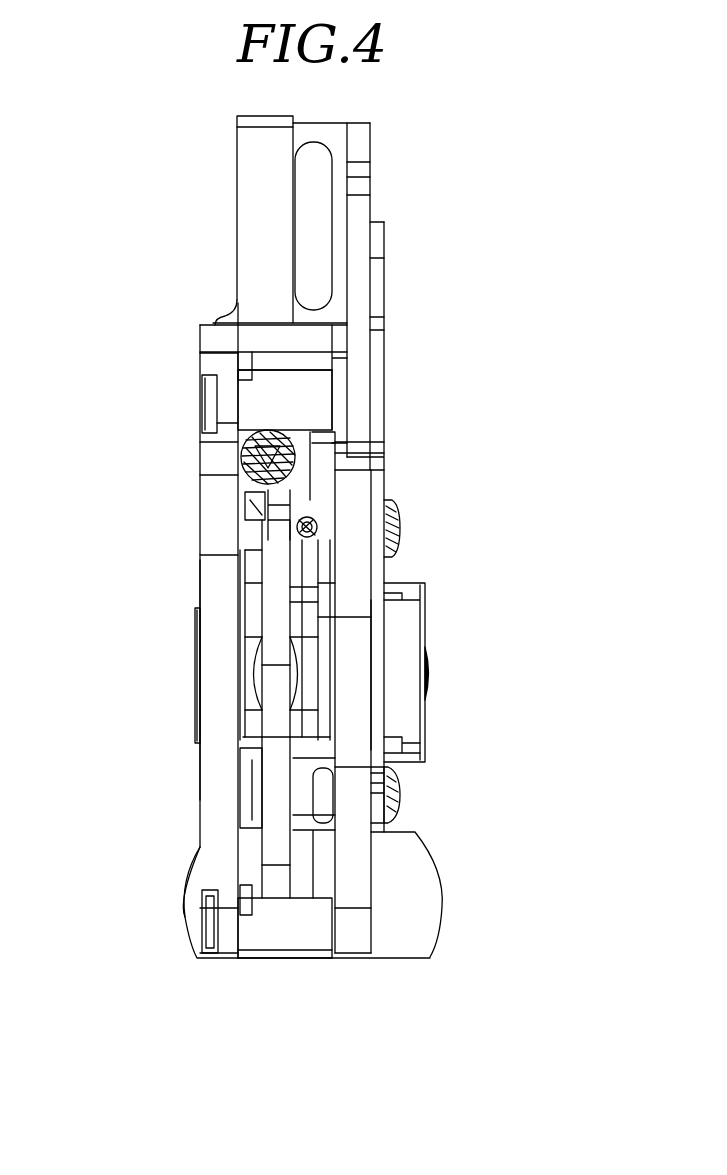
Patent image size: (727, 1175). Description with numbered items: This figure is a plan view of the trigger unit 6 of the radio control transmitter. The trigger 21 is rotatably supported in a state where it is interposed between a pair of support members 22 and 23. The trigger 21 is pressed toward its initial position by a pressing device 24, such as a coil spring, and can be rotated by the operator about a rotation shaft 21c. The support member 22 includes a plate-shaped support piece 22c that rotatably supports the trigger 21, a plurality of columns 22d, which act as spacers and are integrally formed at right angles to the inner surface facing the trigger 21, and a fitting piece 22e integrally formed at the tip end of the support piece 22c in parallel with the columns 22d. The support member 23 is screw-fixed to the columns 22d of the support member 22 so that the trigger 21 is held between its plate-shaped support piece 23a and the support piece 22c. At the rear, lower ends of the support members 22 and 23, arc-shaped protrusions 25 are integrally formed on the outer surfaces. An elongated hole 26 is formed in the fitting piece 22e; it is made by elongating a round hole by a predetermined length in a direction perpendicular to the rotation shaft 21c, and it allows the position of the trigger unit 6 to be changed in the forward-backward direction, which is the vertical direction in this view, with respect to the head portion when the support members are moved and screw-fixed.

The trigger unit 6 is at (122, 230).
The trigger 21 is at (273, 777).
The rotation shaft 21c is at (428, 677).
The support member 22 is at (357, 632).
The support piece 22c is at (357, 717).
The column 22d is at (312, 400).
The fitting piece 22e is at (338, 145).
The support member 23 is at (217, 628).
The support piece 23a is at (217, 675).
The pressing device 24 is at (233, 467).
The arc-shaped protrusion 25 is at (190, 898).
The elongated hole 26 is at (310, 212).